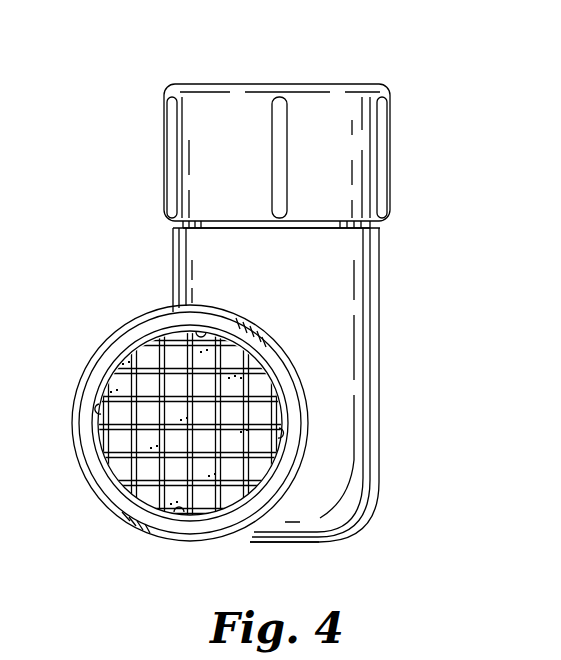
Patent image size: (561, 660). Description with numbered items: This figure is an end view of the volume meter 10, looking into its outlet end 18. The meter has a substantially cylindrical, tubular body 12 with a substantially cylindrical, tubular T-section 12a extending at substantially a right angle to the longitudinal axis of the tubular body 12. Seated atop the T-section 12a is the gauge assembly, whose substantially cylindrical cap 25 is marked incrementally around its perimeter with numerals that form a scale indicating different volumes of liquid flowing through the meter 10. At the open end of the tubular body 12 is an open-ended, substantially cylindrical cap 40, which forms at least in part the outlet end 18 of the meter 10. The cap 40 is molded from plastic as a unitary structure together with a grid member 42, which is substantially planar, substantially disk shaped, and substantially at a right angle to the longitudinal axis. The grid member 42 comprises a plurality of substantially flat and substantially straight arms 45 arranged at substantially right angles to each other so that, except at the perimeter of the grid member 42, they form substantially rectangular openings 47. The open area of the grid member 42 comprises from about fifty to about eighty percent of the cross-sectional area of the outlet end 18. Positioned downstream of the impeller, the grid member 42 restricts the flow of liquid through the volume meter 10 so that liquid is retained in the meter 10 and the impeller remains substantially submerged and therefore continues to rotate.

The volume meter 10 is at (382, 520).
The tubular body 12 is at (325, 518).
The T-section 12a is at (362, 345).
The outlet end 18 is at (210, 545).
The cylindrical cap 25 is at (345, 97).
The cap 40 is at (78, 485).
The grid member 42 is at (173, 485).
The arms 45 is at (188, 378).
The rectangular openings 47 is at (232, 383).